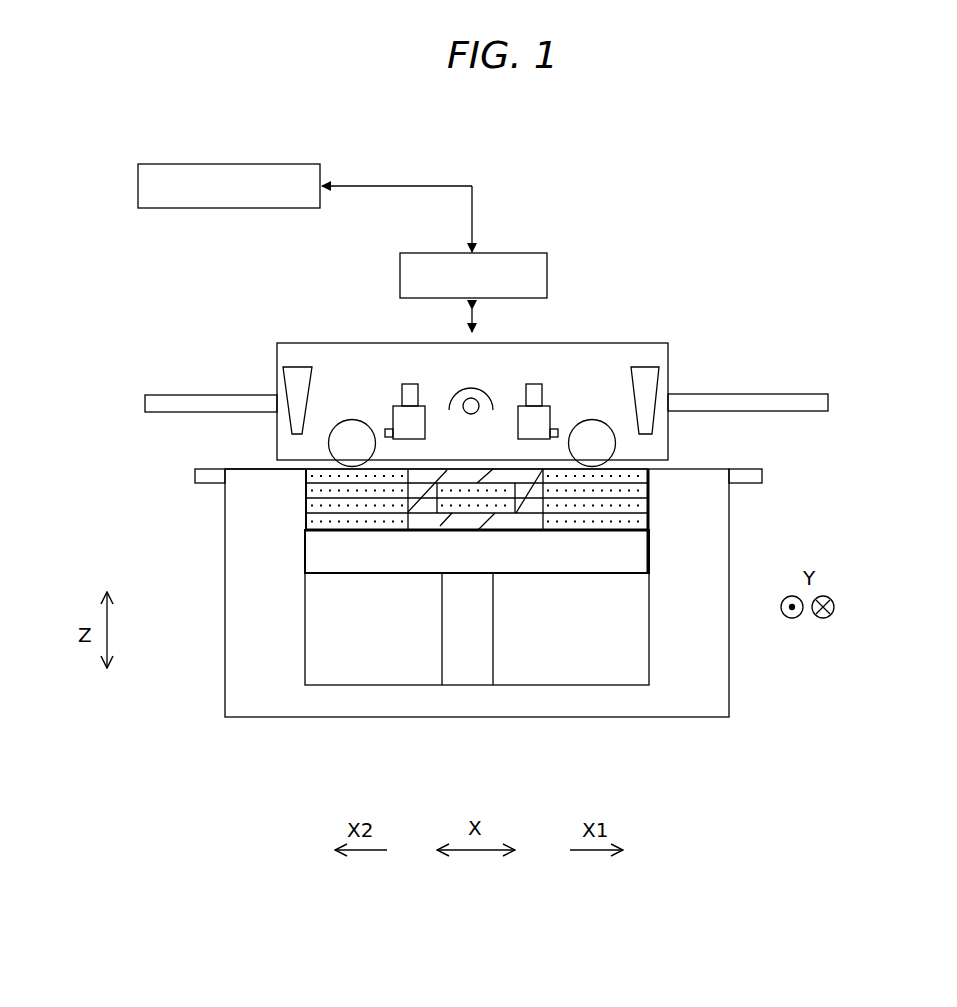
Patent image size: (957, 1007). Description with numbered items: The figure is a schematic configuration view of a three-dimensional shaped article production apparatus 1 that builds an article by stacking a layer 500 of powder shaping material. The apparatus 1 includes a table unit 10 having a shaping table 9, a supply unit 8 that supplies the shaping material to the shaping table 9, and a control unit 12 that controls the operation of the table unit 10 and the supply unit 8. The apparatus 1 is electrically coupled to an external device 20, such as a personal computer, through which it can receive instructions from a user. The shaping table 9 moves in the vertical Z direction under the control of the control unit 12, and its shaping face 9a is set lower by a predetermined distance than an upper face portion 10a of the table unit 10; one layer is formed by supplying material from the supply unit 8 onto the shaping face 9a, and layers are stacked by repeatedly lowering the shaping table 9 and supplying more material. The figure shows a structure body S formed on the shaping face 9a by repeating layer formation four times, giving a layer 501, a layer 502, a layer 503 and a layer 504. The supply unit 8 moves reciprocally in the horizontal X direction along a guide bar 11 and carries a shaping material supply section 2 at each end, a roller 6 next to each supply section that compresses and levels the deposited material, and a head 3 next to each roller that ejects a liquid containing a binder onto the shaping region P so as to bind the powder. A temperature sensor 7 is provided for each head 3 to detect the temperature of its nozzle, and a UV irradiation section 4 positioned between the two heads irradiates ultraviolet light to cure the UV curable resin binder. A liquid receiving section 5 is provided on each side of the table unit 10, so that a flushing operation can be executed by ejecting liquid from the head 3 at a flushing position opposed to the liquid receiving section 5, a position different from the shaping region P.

The three-dimensional shaped article production apparatus 1 is at (856, 333).
The shaping material supply section 2 is at (300, 367).
The head 3 is at (412, 384).
The UV irradiation section 4 is at (473, 388).
The liquid receiving section 5 is at (205, 469).
The roller 6 is at (348, 419).
The temperature sensor 7 is at (388, 429).
The supply unit 8 is at (278, 352).
The shaping table 9 is at (342, 560).
The shaping face 9a is at (307, 533).
The table unit 10 is at (225, 532).
The upper face portion 10a is at (248, 468).
The guide bar 11 is at (770, 394).
The control unit 12 is at (530, 253).
The external device 20 is at (186, 164).
The layer 500 is at (468, 521).
The layer 501 is at (307, 525).
The layer 502 is at (302, 505).
The layer 503 is at (303, 490).
The layer 504 is at (302, 476).
The shaping region P is at (524, 531).
The structure body S is at (403, 521).